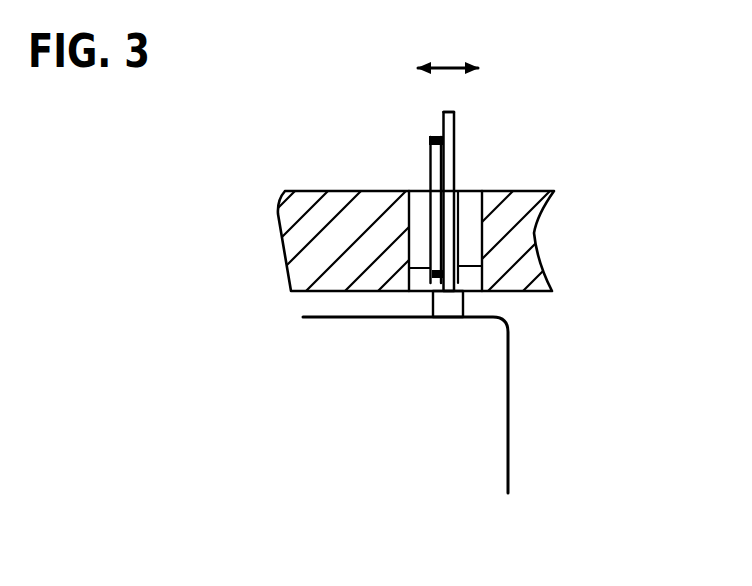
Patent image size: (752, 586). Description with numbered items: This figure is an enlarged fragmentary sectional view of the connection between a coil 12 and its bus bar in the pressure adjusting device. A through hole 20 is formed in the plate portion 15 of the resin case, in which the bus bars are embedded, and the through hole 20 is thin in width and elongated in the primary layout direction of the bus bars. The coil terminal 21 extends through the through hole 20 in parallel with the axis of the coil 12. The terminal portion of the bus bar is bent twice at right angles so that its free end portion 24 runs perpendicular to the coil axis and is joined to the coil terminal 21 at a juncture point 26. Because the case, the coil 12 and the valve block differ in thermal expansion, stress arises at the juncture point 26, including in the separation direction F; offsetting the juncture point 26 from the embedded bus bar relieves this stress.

The coil 12 is at (495, 420).
The plate portion 15 is at (535, 233).
The through hole 20 is at (418, 192).
The coil terminal 21 is at (455, 163).
The free end portion 24 is at (430, 138).
The juncture point 26 is at (441, 128).
The separation direction F is at (448, 47).